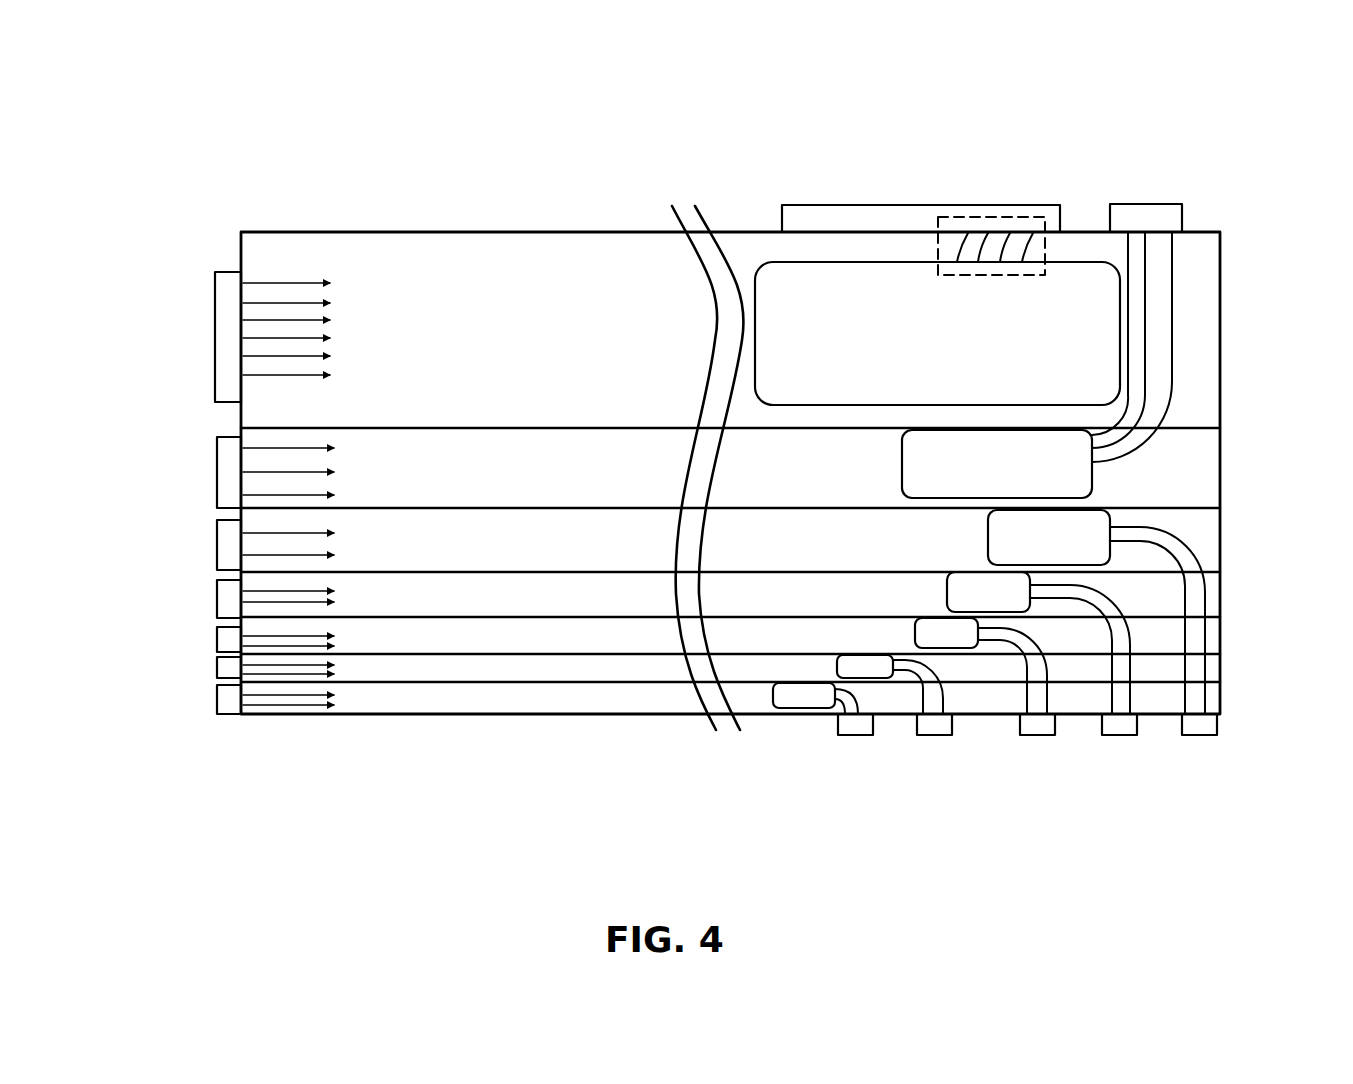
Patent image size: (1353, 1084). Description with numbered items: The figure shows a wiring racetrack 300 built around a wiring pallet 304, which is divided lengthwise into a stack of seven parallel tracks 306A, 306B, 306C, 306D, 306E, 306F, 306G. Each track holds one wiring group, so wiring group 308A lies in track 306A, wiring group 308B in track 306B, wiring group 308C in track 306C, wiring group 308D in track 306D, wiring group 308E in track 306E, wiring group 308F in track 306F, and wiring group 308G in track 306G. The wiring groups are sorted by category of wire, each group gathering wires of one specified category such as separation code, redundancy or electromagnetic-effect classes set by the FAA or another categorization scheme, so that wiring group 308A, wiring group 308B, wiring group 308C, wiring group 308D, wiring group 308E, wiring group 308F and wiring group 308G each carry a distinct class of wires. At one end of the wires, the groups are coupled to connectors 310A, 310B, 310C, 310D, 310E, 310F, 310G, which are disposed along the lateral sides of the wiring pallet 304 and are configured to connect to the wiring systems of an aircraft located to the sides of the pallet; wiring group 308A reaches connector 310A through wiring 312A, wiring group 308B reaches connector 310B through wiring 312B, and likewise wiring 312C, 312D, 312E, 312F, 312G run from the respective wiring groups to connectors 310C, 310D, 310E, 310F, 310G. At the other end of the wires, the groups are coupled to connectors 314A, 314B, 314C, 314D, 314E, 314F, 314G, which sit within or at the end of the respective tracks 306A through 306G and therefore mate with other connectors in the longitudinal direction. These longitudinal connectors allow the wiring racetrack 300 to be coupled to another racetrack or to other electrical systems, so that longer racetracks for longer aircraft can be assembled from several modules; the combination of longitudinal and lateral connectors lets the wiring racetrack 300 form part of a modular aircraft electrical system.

The wiring racetrack 300 is at (363, 103).
The wiring pallet 304 is at (555, 232).
The track 306A is at (485, 344).
The track 306B is at (504, 486).
The track 306C is at (552, 553).
The track 306D is at (625, 609).
The track 306E is at (560, 649).
The track 306F is at (415, 665).
The track 306G is at (532, 695).
The wiring group 308A is at (975, 368).
The wiring group 308B is at (1030, 496).
The wiring group 308C is at (988, 537).
The wiring group 308D is at (947, 594).
The wiring group 308E is at (915, 630).
The wiring group 308F is at (837, 664).
The wiring group 308G is at (787, 715).
The connector 310A is at (802, 205).
The connector 310B is at (1150, 203).
The connector 310C is at (1200, 735).
The connector 310D is at (1120, 735).
The connector 310E is at (1035, 735).
The connector 310F is at (932, 735).
The connector 310G is at (848, 735).
The wiring 312A is at (975, 217).
The wiring 312B is at (1172, 275).
The wiring 312C is at (1205, 637).
The wiring 312D is at (1132, 693).
The wiring 312E is at (1047, 693).
The wiring 312F is at (945, 695).
The wiring 312G is at (882, 705).
The connector 314A is at (215, 332).
The connector 314B is at (215, 480).
The connector 314C is at (215, 545).
The connector 314D is at (215, 610).
The connector 314E is at (215, 638).
The connector 314F is at (215, 670).
The connector 314G is at (228, 717).